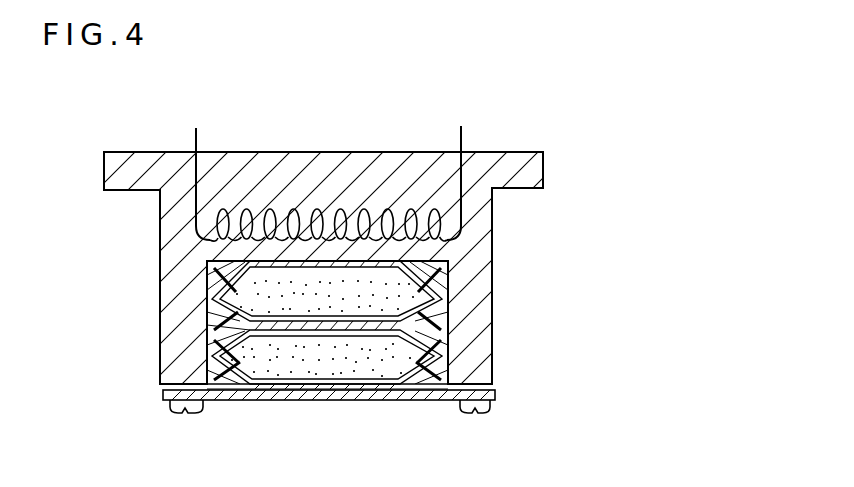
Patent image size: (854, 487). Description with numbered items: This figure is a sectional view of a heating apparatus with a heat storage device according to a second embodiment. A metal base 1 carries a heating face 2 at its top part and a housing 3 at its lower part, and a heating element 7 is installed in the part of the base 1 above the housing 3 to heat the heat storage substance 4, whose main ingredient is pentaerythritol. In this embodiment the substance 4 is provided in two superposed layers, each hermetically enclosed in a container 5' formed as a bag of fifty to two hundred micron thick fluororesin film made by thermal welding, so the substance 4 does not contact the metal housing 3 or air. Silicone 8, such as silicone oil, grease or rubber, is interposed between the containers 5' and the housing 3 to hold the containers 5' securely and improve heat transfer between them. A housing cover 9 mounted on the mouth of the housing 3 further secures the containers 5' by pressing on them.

The metal base 1 is at (516, 170).
The heating face 2 is at (368, 150).
The housing 3 is at (178, 276).
The heat storage substance 4 is at (397, 352).
The containers 5' is at (274, 325).
The heating element 7 is at (198, 227).
The silicone 8 is at (212, 373).
The housing cover 9 is at (400, 399).